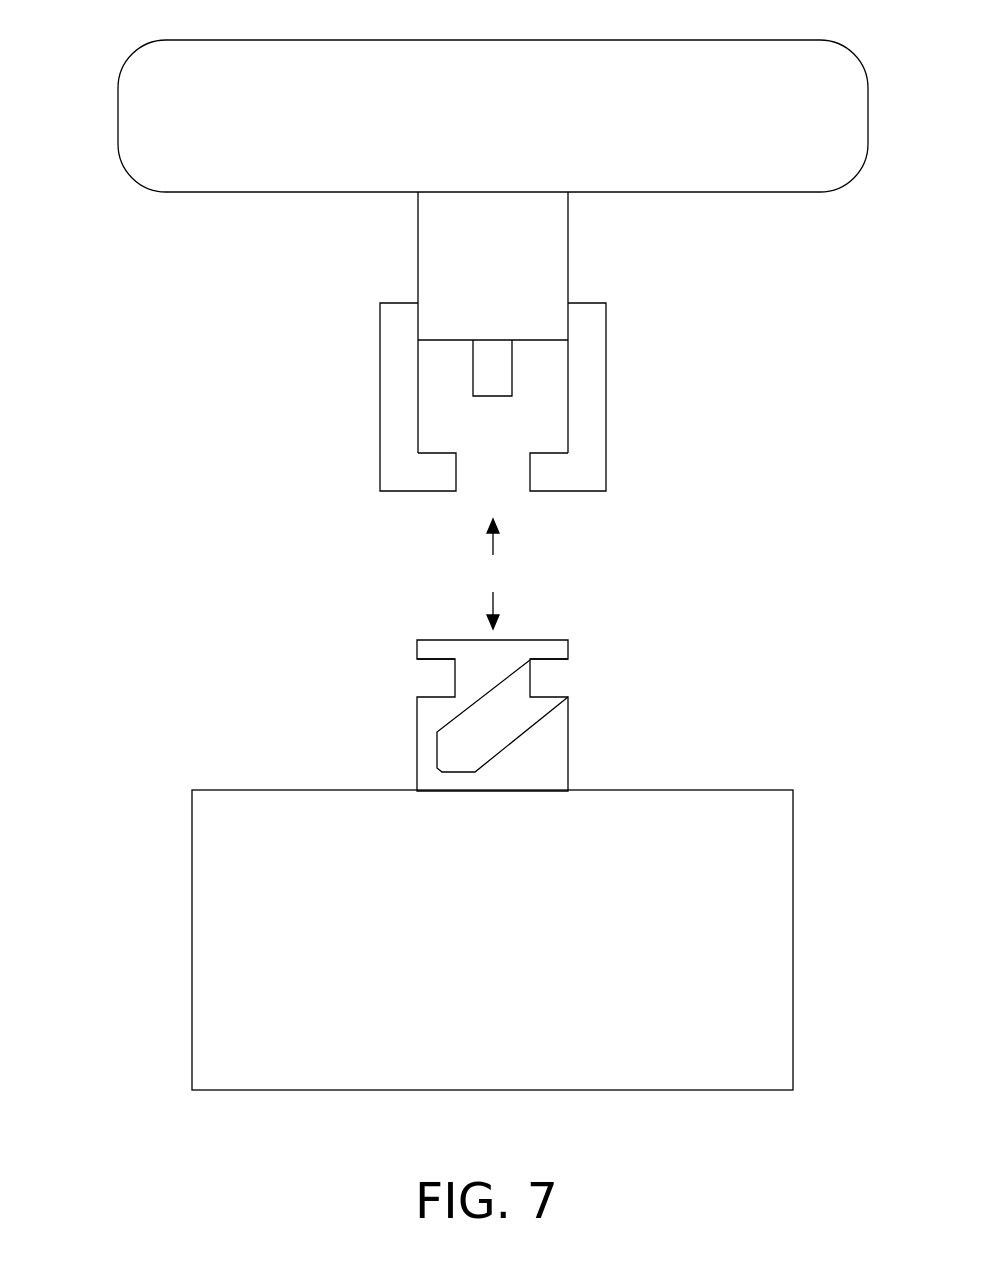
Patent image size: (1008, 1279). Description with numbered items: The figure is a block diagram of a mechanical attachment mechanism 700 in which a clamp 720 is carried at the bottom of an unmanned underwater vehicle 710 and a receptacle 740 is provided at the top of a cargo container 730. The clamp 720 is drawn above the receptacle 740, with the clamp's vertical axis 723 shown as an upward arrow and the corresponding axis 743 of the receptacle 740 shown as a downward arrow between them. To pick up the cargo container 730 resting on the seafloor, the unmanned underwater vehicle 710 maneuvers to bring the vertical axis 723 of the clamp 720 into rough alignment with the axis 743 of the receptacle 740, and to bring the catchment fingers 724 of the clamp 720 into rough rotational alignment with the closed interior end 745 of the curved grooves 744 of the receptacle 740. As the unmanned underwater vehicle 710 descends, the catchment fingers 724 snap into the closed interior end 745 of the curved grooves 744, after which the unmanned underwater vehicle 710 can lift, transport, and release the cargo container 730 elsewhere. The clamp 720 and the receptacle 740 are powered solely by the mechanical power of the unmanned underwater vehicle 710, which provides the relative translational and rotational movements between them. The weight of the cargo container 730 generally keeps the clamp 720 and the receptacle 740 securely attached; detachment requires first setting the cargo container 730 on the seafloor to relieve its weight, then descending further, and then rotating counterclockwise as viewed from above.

The mechanical attachment mechanism 700 is at (77, 42).
The unmanned underwater vehicle (UUV) 710 is at (502, 40).
The clamp 720 is at (227, 449).
The vertical axis of the clamp 723 is at (492, 546).
The catchment fingers 724 is at (380, 415).
The cargo container 730 is at (230, 790).
The receptacle 740 is at (226, 679).
The axis of the receptacle 743 is at (492, 603).
The curved grooves 744 is at (408, 679).
The closed interior end 745 is at (480, 757).